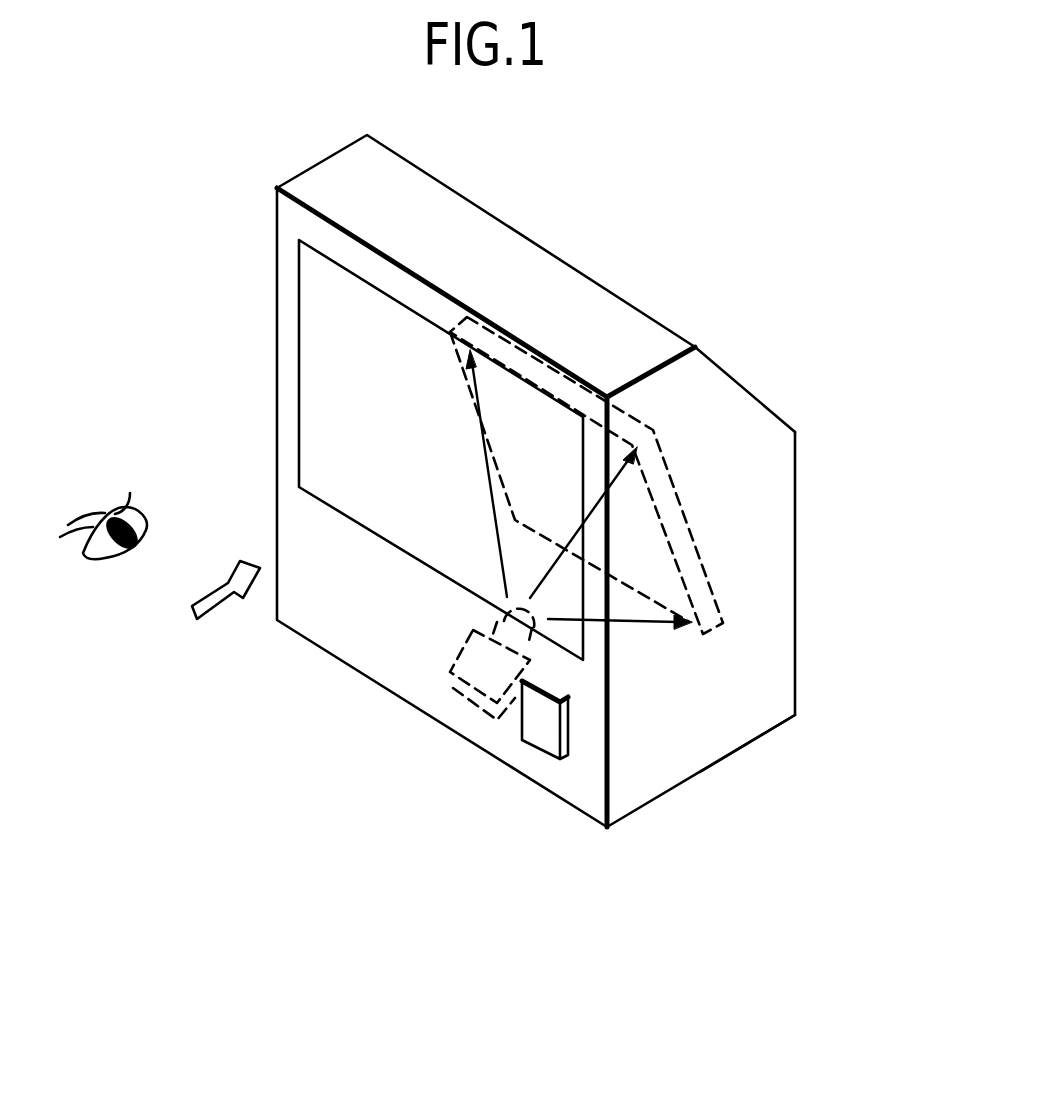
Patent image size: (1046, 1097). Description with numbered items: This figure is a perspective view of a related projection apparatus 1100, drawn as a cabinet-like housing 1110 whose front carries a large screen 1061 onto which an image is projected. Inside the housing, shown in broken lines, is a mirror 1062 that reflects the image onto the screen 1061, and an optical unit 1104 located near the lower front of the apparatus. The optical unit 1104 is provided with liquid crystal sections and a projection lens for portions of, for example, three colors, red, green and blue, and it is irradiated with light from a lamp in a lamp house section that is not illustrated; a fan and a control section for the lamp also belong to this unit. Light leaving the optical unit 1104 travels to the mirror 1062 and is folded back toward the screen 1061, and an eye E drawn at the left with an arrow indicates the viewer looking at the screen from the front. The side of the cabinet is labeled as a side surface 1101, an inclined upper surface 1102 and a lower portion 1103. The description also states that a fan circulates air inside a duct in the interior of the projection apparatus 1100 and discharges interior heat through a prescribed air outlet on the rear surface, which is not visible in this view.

The projection apparatus 1100 is at (445, 799).
The housing 1110 is at (577, 783).
The side surface of housing 1101 is at (797, 629).
The inclined upper surface 1102 is at (730, 425).
The lower portion of housing 1103 is at (752, 722).
The screen 1061 is at (317, 387).
The mirror 1062 is at (637, 512).
The optical unit 1104 is at (470, 680).
The viewer's eye E is at (228, 592).